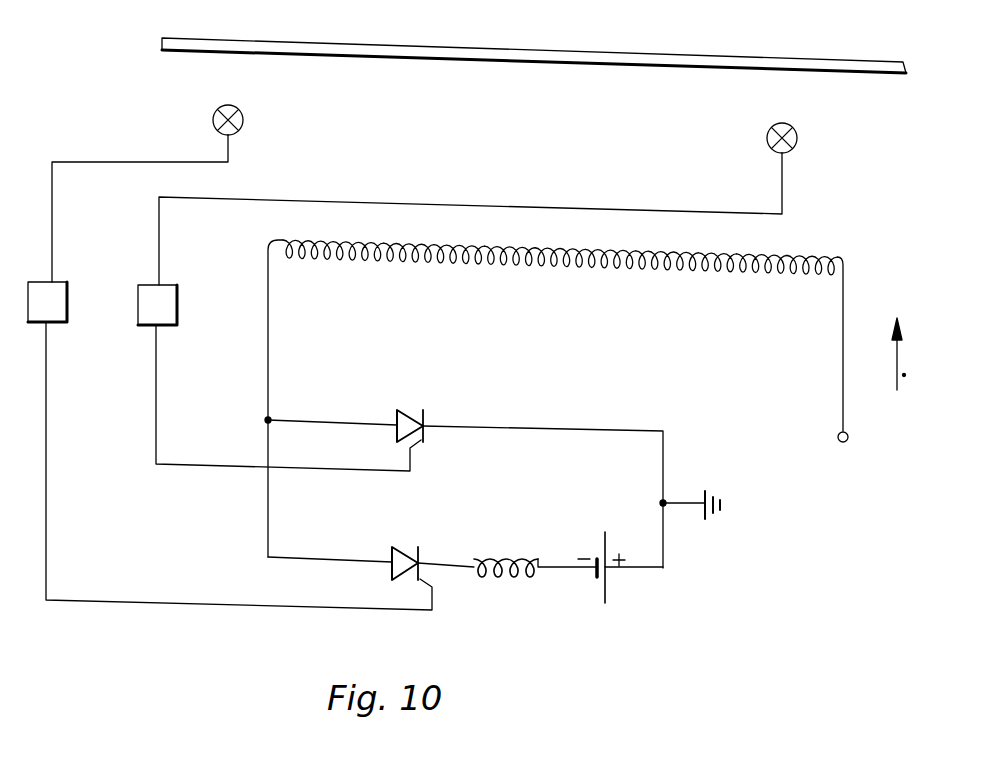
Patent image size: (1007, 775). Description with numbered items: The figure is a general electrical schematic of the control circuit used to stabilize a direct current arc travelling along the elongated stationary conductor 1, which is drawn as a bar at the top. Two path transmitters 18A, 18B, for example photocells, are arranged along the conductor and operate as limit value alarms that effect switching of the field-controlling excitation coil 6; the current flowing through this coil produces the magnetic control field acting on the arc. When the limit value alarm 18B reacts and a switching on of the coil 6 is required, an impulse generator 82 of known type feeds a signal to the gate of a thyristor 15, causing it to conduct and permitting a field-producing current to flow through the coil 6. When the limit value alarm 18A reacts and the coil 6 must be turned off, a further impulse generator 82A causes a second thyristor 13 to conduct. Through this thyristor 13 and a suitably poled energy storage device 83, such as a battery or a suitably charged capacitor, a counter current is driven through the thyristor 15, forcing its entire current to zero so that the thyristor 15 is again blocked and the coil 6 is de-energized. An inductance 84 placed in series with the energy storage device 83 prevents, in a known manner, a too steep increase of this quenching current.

The elongated stationary conductor 1 is at (708, 53).
The photocell 18A is at (244, 119).
The photocell 18B is at (798, 137).
The further impulse generator 82A is at (67, 297).
The impulse generator 82 is at (178, 303).
The excitation coil 6 is at (570, 268).
The thyristor 15 is at (407, 412).
The thyristor 13 is at (403, 550).
The inductance 84 is at (518, 572).
The energy storage device 83 is at (598, 580).